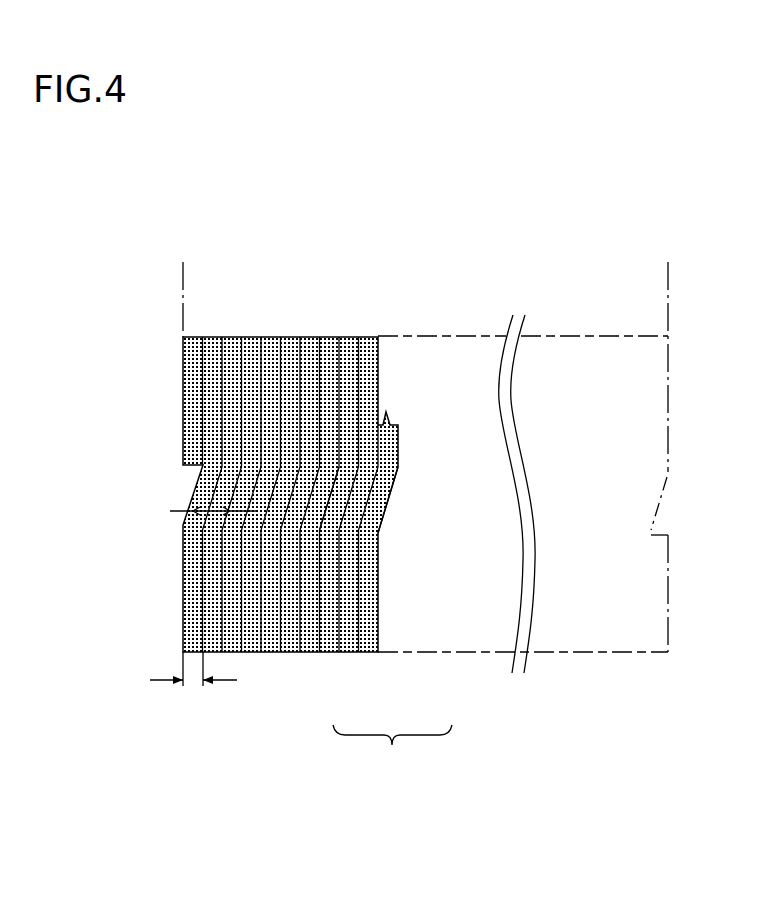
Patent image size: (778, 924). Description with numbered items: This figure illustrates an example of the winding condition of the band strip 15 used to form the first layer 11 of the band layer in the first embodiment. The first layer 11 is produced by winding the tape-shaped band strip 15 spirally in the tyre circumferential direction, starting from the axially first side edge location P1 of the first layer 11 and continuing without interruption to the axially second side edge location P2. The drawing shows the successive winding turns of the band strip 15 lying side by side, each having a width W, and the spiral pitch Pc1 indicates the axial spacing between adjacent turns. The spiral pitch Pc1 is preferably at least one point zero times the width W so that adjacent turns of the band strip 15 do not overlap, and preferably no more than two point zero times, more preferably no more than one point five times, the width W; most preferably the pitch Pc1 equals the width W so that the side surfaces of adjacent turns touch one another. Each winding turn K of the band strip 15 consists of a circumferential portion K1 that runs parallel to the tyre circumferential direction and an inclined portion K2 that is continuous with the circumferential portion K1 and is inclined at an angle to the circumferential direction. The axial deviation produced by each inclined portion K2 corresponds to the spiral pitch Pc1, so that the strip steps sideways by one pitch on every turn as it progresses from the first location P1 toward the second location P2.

The first layer 11 is at (290, 313).
The band strip 15 is at (183, 402).
The axially first side edge location P1 is at (182, 282).
The axially second side edge location P2 is at (667, 440).
The spiral pitch Pc1 is at (216, 513).
The width of the band strip W is at (193, 683).
The winding turn K is at (392, 753).
The circumferential portion K1 is at (347, 630).
The inclined portion K2 is at (362, 497).